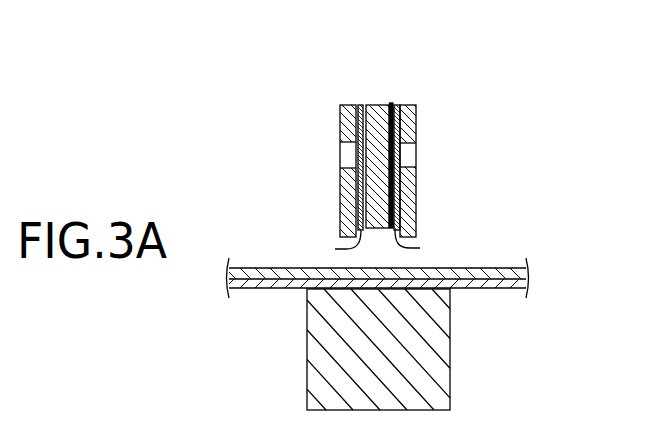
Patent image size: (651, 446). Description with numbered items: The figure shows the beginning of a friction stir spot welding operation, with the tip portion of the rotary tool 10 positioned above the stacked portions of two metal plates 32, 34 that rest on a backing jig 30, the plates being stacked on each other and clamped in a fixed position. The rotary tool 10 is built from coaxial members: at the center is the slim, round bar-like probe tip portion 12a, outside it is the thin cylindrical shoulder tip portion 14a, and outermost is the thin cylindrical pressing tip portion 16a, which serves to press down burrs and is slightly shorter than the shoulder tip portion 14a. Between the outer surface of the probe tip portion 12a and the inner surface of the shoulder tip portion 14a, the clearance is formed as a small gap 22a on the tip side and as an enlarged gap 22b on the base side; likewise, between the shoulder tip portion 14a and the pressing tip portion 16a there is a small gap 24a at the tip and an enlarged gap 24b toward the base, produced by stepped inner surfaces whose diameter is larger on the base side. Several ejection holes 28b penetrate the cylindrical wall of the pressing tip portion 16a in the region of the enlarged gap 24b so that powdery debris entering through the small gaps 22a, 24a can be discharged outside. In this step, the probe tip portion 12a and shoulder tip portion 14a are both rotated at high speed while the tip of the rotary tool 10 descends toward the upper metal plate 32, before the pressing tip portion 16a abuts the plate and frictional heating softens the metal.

The rotary tool 10 is at (445, 86).
The probe tip portion 12a is at (377, 105).
The shoulder tip portion 14a is at (393, 104).
The pressing tip portion 16a is at (348, 123).
The small gap 22a is at (335, 249).
The enlarged gap 22b is at (364, 187).
The small gap 24a is at (420, 248).
The enlarged gap 24b is at (397, 183).
The ejection holes 28b is at (411, 144).
The backing jig 30 is at (318, 353).
The metal plate 32 is at (505, 273).
The metal plate 34 is at (510, 287).